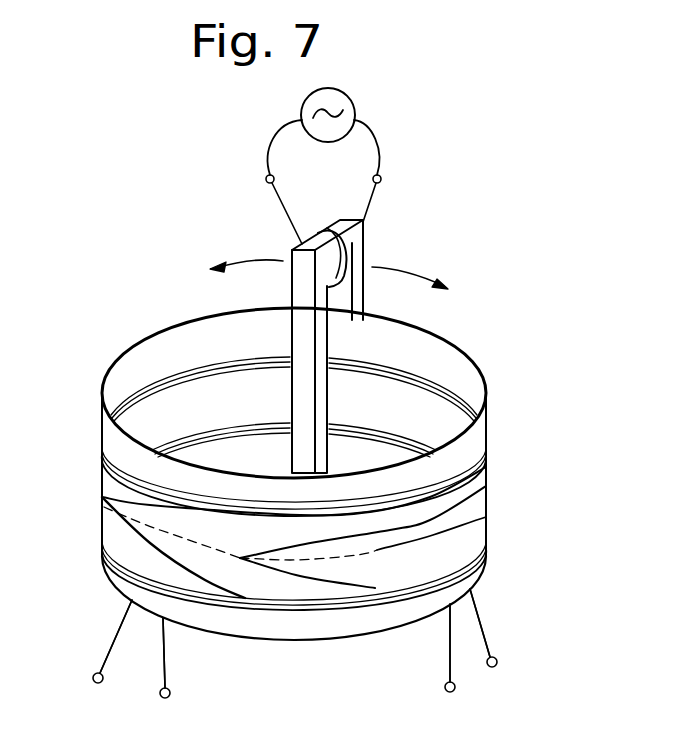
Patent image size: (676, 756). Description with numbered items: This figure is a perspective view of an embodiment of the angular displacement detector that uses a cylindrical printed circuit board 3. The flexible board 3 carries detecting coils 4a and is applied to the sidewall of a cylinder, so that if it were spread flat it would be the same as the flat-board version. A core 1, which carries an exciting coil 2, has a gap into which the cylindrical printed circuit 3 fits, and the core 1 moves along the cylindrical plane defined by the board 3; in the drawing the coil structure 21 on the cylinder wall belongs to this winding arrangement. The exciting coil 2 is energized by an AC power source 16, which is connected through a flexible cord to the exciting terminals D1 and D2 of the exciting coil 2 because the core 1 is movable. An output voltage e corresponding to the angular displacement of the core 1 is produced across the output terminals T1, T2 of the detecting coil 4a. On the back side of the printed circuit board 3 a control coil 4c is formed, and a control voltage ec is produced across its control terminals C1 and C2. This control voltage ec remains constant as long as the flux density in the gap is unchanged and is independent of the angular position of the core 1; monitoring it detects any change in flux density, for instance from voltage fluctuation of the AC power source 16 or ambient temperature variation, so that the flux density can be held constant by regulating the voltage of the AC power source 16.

The core 1 is at (368, 248).
The exciting coil 2 is at (302, 242).
The cylindrical printed circuit board 3 is at (455, 343).
The detecting coil 4a is at (302, 617).
The control coil 4c is at (181, 372).
The AC power source 16 is at (355, 106).
The helical drive winding 21 is at (486, 517).
The exciting terminal D1 is at (276, 207).
The exciting terminal D2 is at (384, 196).
The control terminal C1 is at (100, 658).
The control terminal C2 is at (157, 678).
The output terminal T1 is at (450, 666).
The output terminal T2 is at (498, 641).
The control voltage ec is at (132, 644).
The output voltage e is at (470, 635).